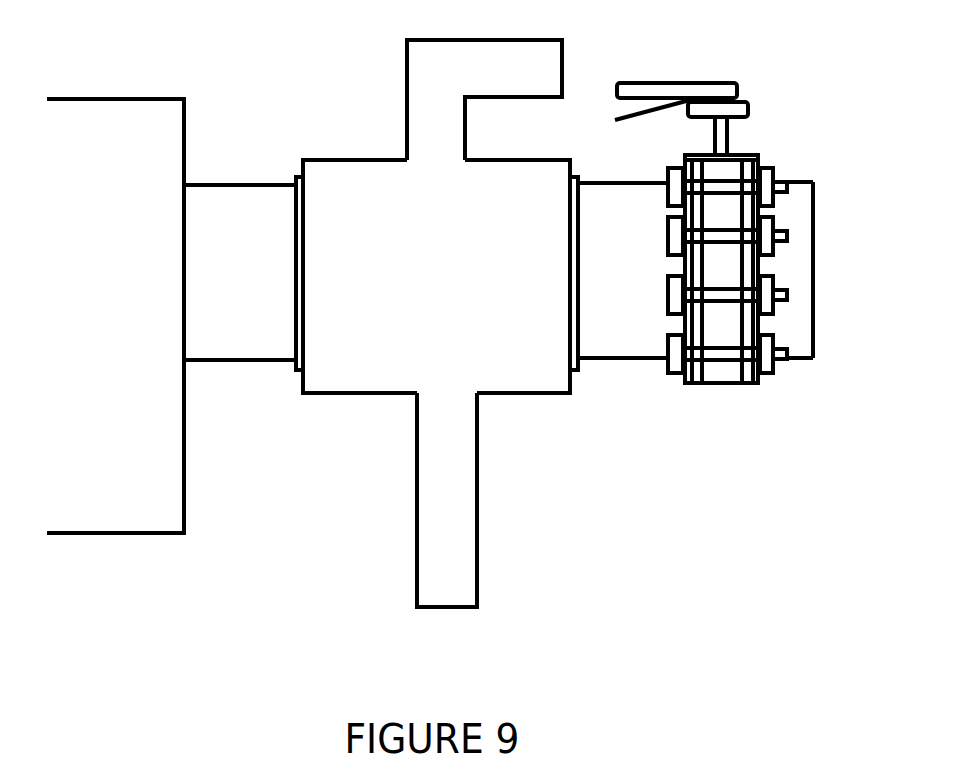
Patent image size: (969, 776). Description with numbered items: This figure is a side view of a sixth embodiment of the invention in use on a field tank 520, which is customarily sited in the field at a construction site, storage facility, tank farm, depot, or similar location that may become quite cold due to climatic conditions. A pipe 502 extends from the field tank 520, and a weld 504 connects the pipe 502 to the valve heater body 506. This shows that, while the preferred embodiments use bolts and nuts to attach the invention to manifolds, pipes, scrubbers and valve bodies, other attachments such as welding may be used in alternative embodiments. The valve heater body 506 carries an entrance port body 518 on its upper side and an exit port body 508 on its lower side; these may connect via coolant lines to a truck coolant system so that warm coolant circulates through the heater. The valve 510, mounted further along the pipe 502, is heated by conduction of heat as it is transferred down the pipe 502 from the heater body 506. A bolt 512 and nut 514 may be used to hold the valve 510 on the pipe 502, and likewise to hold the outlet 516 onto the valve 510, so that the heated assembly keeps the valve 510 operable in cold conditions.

The pipe 502 is at (238, 360).
The weld 504 is at (297, 373).
The valve heater body 506 is at (377, 397).
The exit port body 508 is at (477, 505).
The valve 510 is at (718, 383).
The bolt 512 is at (774, 373).
The nut 514 is at (793, 358).
The outlet 516 is at (813, 277).
The entrance port body 518 is at (407, 101).
The field tank 520 is at (140, 317).